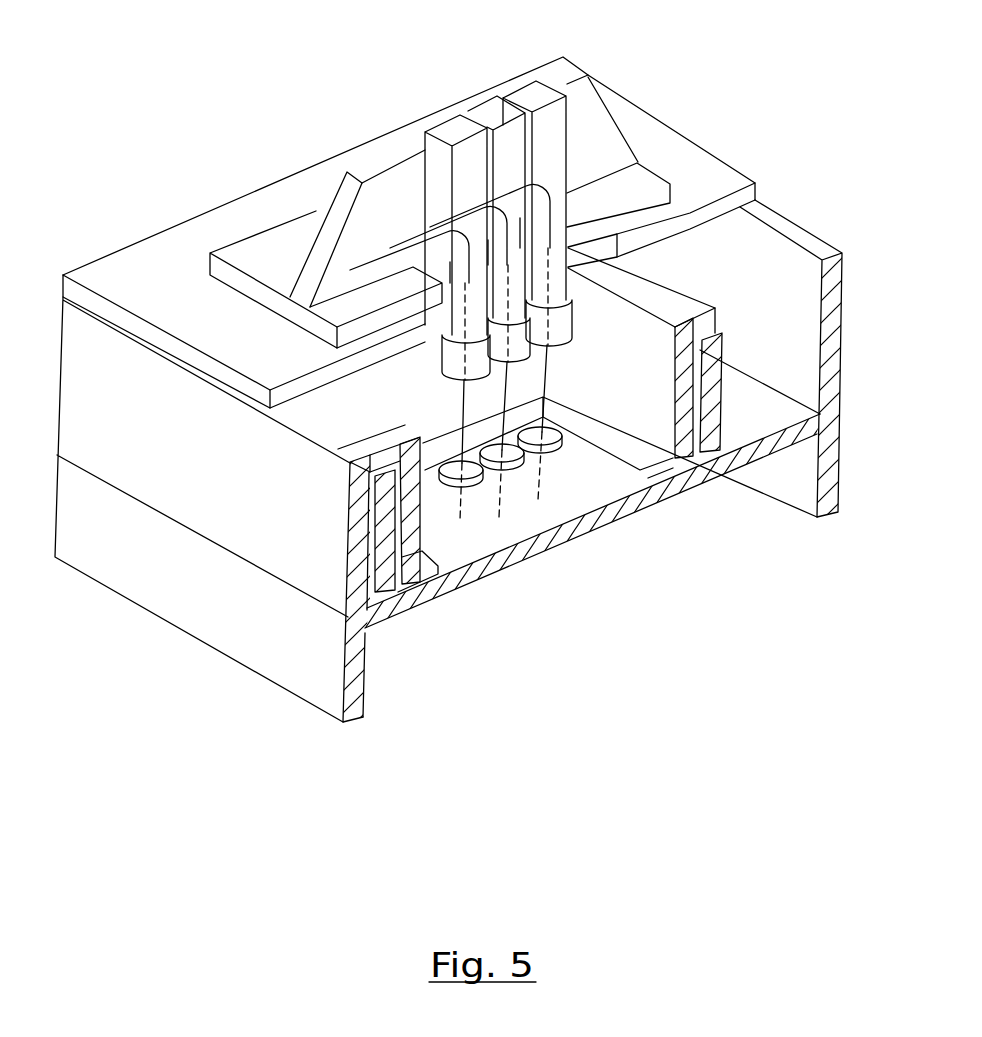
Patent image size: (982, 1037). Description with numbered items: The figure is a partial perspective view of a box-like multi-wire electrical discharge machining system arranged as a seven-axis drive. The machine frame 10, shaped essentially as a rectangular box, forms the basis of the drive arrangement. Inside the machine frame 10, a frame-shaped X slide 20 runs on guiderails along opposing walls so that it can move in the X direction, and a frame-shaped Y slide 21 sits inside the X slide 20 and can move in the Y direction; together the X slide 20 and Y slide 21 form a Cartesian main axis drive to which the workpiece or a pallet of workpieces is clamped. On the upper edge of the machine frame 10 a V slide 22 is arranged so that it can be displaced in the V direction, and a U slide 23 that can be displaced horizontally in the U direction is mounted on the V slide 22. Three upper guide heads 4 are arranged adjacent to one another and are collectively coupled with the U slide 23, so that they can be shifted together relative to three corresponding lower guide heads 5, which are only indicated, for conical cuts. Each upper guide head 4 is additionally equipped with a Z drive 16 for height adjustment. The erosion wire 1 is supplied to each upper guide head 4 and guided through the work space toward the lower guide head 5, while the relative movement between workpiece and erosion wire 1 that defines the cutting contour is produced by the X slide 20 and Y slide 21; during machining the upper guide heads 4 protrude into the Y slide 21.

The erosion wire 1 is at (402, 233).
The upper guide head 4 is at (553, 357).
The lower guide head 5 is at (522, 468).
The machine frame 10 is at (184, 442).
The Z drive 16 is at (483, 83).
The X slide 20 is at (383, 583).
The Y slide 21 is at (410, 573).
The V slide 22 is at (160, 290).
The U slide 23 is at (291, 262).